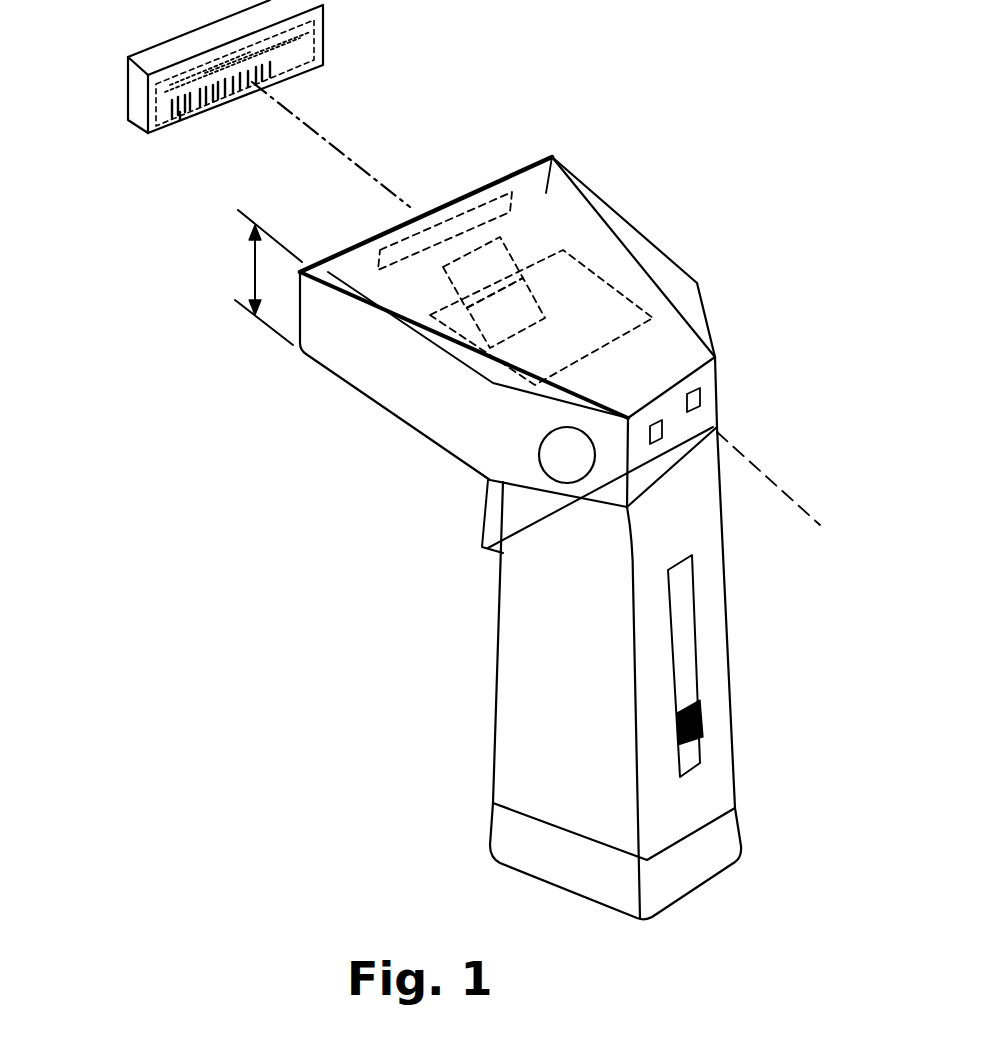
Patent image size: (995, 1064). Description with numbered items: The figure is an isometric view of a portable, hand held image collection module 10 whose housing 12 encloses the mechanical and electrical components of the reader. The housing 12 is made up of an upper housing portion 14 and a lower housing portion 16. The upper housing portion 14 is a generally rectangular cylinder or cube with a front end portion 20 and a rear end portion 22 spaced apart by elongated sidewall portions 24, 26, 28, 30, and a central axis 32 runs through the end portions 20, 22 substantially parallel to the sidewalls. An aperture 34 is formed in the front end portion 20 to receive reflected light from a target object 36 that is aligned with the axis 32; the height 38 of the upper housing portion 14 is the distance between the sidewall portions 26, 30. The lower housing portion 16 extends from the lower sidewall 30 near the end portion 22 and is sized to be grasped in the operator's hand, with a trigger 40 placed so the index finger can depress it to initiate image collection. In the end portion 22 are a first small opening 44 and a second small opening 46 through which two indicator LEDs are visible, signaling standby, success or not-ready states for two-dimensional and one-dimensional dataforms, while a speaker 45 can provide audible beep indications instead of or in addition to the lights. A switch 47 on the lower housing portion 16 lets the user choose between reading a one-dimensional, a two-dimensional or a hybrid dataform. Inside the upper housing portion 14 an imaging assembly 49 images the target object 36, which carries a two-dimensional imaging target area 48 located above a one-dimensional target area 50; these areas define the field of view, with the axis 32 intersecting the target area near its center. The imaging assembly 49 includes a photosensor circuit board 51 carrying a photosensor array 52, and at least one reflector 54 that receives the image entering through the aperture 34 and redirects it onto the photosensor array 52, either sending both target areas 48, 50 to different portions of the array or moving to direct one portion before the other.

The portable image collection module 10 is at (690, 168).
The housing 12 is at (652, 250).
The upper housing portion 14 is at (714, 301).
The lower housing portion 16 is at (735, 648).
The front end portion 20 is at (438, 233).
The end portion 22 is at (710, 388).
The sidewall portion 24 is at (497, 429).
The sidewall portion 26 is at (552, 157).
The sidewall portion 28 is at (718, 345).
The lower sidewall 30 is at (420, 435).
The central axis 32 is at (300, 127).
The aperture 34 is at (492, 200).
The target object 36 is at (145, 107).
The height 38 is at (255, 270).
The trigger 40 is at (490, 525).
The first small opening 44 is at (701, 397).
The speaker 45 is at (488, 540).
The second small opening 46 is at (663, 430).
The switch 47 is at (672, 727).
The two-dimensional imaging target area 48 is at (327, 33).
The imaging assembly 49 is at (528, 238).
The one-dimensional target area 50 is at (327, 67).
The photosensor circuit board 51 is at (612, 335).
The photosensor array 52 is at (532, 298).
The reflector 54 is at (447, 285).